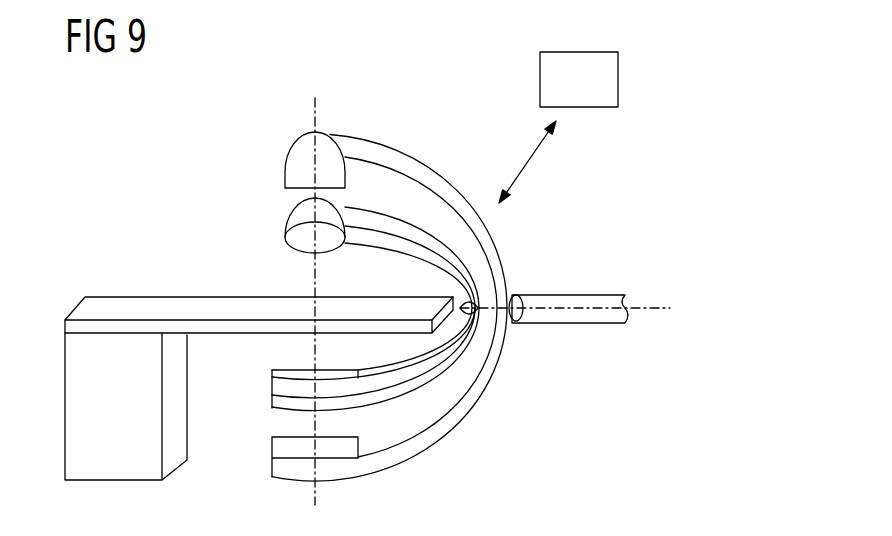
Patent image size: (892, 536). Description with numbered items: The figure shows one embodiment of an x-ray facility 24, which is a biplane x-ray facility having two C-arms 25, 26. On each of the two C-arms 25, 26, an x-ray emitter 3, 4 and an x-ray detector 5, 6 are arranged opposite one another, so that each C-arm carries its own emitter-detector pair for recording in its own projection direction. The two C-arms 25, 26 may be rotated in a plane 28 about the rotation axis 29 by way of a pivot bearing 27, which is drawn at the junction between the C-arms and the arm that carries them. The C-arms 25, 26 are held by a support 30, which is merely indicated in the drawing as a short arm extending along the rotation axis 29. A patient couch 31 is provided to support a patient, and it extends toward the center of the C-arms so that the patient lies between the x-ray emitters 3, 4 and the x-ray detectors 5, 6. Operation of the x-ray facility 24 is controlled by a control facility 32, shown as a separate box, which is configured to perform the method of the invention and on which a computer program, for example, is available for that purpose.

The x-ray emitter 3 is at (287, 221).
The x-ray emitter 4 is at (287, 163).
The x-ray detector 5 is at (297, 370).
The x-ray detector 6 is at (280, 448).
The x-ray facility 24 is at (655, 153).
The C-arm 25 is at (432, 181).
The C-arm 26 is at (377, 222).
The pivot bearing 27 is at (512, 293).
The plane 28 is at (313, 110).
The rotation axis 29 is at (647, 308).
The support 30 is at (577, 294).
The patient couch 31 is at (163, 302).
The control facility 32 is at (618, 63).